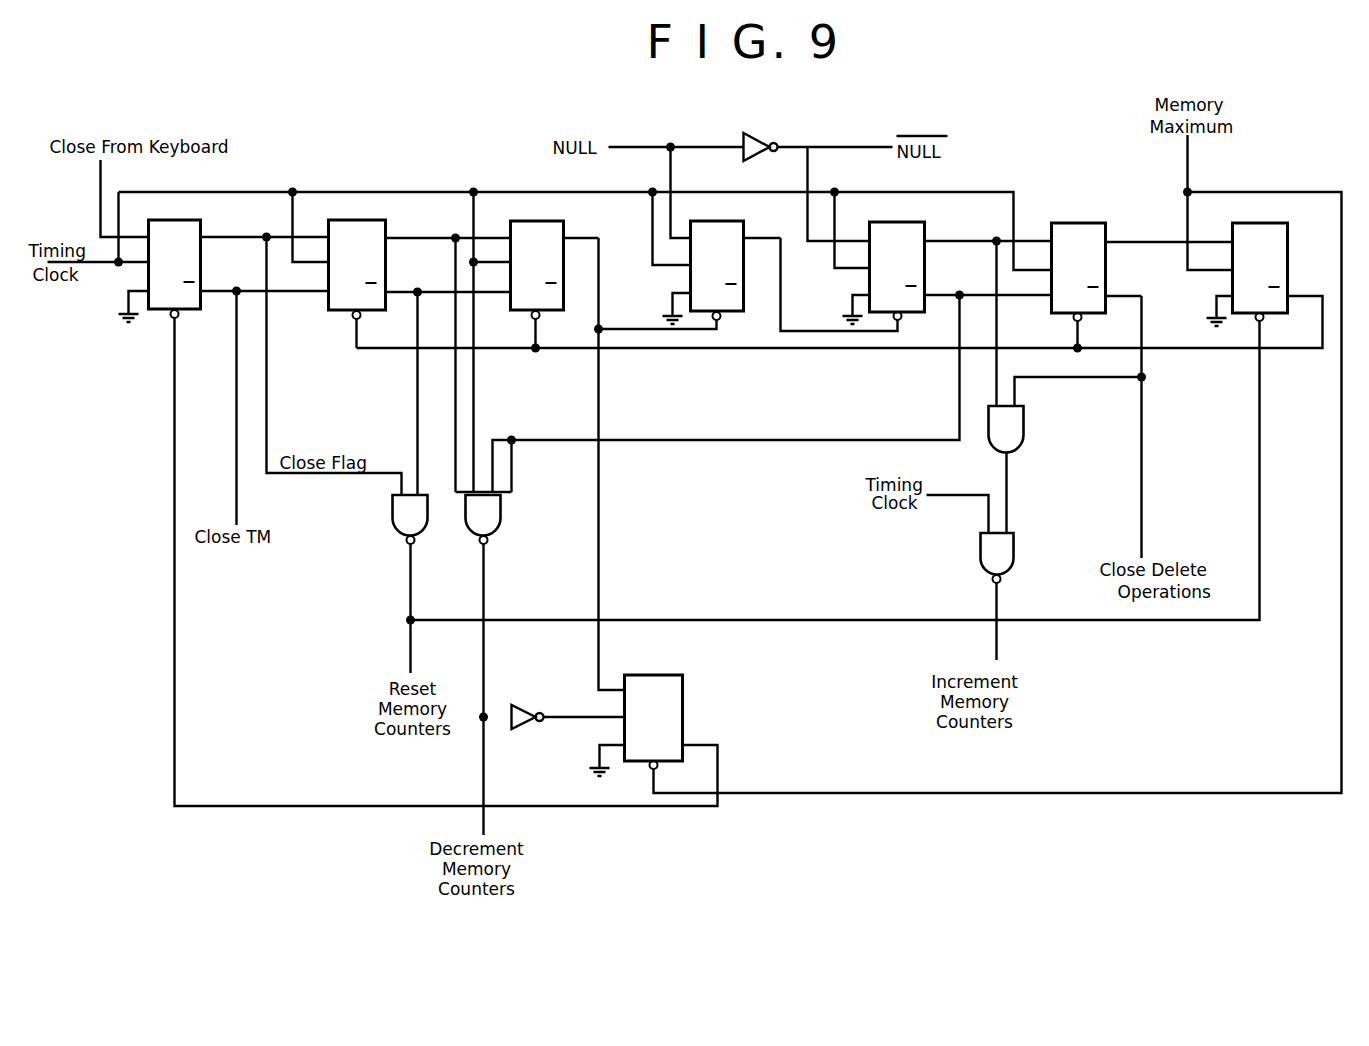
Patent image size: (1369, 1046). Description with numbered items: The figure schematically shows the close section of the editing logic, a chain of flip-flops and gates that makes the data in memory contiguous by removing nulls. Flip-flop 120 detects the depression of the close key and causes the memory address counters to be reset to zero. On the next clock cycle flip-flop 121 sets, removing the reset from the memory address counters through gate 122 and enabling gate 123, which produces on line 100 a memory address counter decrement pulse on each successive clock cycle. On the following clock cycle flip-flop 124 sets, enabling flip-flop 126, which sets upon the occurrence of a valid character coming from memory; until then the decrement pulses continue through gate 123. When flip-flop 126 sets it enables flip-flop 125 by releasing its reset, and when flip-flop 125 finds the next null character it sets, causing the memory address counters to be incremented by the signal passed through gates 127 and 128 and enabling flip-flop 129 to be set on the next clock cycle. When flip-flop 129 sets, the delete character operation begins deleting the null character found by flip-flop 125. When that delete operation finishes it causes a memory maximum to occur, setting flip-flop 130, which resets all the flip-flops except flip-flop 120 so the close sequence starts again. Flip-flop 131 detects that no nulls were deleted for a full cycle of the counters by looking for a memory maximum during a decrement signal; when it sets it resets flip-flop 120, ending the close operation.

The line 100 is at (484, 764).
The flip-flop 120 is at (176, 222).
The flip-flop 121 is at (356, 222).
The gate 122 is at (396, 519).
The gate 123 is at (496, 517).
The flip-flop 124 is at (540, 223).
The flip-flop 125 is at (905, 224).
The flip-flop 126 is at (718, 223).
The gate 127 is at (1019, 435).
The gate 128 is at (1006, 564).
The flip-flop 129 is at (1082, 225).
The flip-flop 130 is at (1270, 225).
The flip-flop 131 is at (657, 677).